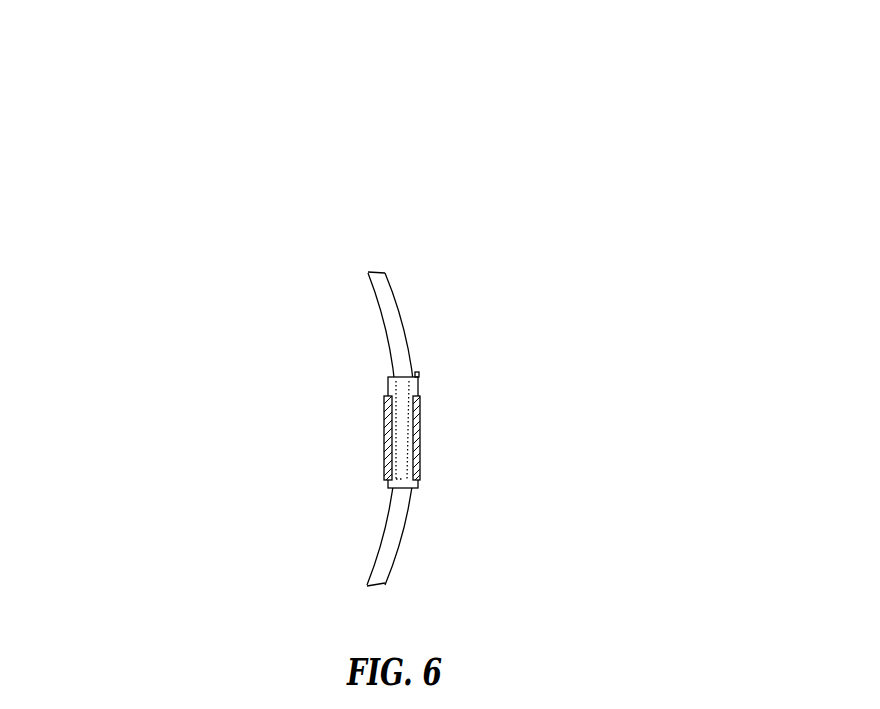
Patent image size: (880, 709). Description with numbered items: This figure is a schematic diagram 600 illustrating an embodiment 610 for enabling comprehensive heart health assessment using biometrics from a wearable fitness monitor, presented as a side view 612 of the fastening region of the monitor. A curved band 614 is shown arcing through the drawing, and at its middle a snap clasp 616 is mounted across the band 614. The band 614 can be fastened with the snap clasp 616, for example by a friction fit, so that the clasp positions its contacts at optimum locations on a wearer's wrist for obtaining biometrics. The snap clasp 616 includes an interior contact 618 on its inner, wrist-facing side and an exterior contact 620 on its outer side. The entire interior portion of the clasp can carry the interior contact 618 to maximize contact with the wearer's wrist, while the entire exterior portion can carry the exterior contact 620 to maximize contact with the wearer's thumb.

The side view illustration of band embodiment 600 is at (852, 41).
The embodiment 610 is at (212, 96).
The side view 612 is at (195, 186).
The band 614 is at (370, 285).
The snap clasp 616 is at (417, 385).
The interior contact 618 is at (386, 440).
The exterior contact 620 is at (420, 443).